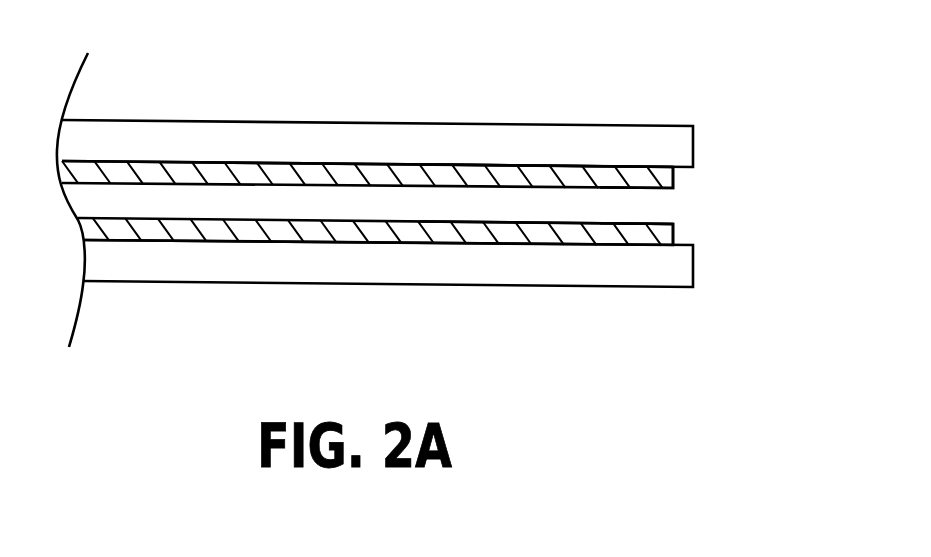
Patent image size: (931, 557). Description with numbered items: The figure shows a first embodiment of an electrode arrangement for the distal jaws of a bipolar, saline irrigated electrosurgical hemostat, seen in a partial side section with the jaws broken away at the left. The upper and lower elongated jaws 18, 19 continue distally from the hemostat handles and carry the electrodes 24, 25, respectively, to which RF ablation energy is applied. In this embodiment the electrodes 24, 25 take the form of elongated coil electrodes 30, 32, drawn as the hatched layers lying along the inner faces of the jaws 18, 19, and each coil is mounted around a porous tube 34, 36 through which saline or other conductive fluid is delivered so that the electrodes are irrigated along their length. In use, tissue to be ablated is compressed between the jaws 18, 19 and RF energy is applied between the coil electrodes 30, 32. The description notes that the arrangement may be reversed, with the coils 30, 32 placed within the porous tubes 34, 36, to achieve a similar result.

The jaw 18 is at (308, 123).
The jaw 19 is at (305, 285).
The electrode 24 is at (195, 162).
The electrode 25 is at (195, 242).
The coil electrode 30 is at (537, 172).
The coil electrode 32 is at (603, 225).
The porous tube 34 is at (637, 189).
The porous tube 36 is at (637, 224).